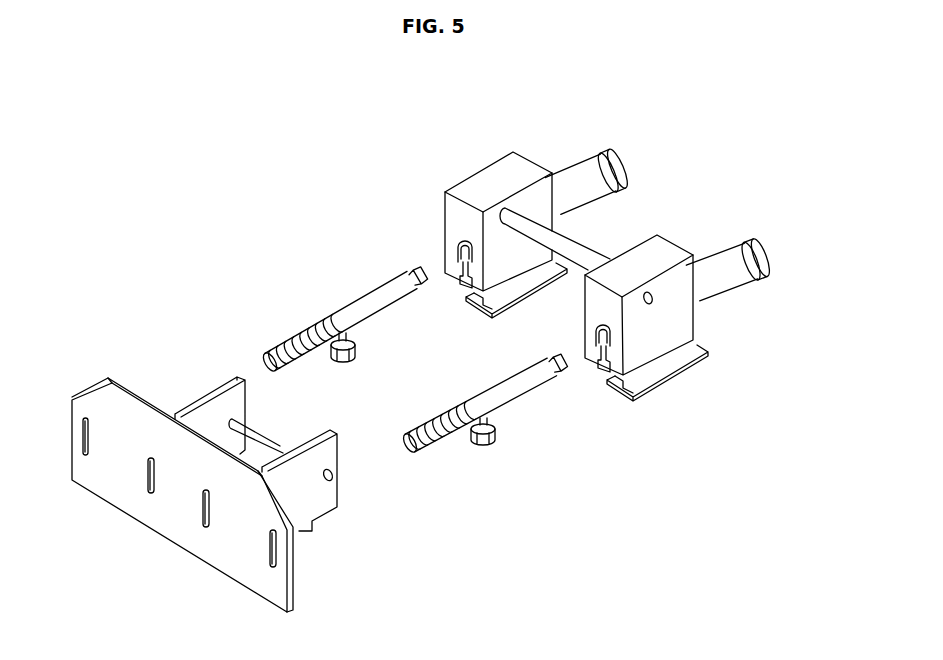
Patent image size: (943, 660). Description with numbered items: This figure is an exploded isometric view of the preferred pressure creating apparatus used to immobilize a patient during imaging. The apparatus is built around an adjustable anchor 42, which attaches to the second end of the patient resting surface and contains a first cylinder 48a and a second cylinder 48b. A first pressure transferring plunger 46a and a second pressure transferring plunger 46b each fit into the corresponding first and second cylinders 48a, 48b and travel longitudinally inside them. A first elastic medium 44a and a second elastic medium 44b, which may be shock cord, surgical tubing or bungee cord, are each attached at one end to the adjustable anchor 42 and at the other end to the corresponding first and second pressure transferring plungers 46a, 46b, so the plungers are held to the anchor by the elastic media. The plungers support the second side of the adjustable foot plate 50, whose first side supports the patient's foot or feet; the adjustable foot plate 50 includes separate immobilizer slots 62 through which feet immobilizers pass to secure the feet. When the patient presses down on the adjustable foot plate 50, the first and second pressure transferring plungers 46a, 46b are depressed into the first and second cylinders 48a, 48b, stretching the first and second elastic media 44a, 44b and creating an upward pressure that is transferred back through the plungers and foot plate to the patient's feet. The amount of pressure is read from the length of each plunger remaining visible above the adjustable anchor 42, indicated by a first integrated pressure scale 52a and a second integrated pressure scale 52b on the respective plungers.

The adjustable anchor 42 is at (520, 282).
The first elastic medium 44a is at (357, 340).
The second elastic medium 44b is at (487, 438).
The first pressure transferring plunger 46a is at (350, 305).
The second pressure transferring plunger 46b is at (503, 405).
The first cylinder 48a is at (582, 185).
The second cylinder 48b is at (737, 263).
The adjustable foot plate 50 is at (102, 410).
The first integrated pressure scale 52a is at (288, 338).
The second integrated pressure scale 52b is at (425, 452).
The immobilizer slots 62 is at (270, 553).